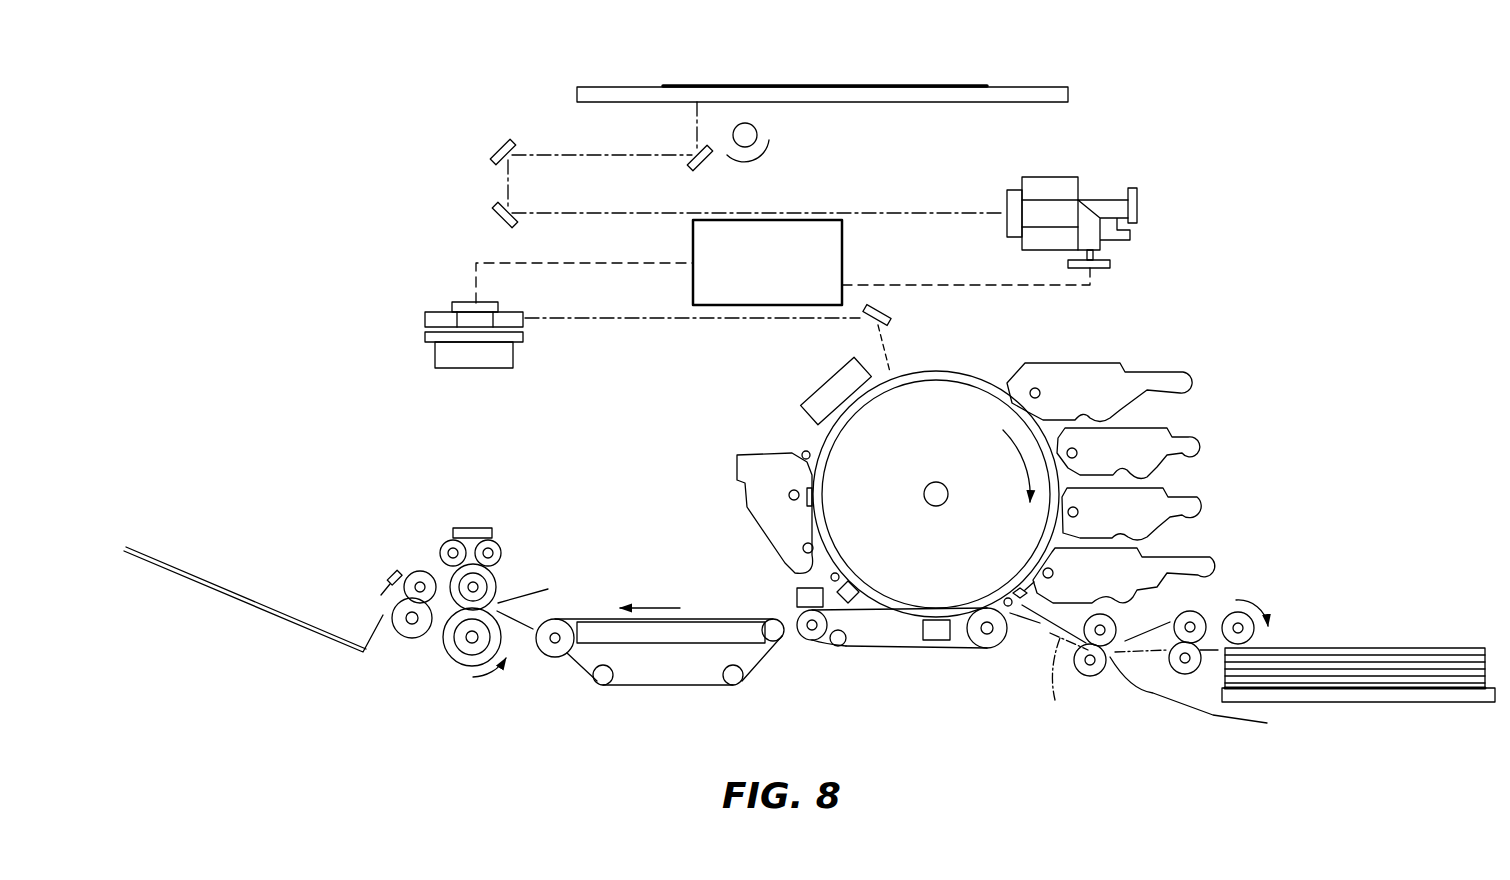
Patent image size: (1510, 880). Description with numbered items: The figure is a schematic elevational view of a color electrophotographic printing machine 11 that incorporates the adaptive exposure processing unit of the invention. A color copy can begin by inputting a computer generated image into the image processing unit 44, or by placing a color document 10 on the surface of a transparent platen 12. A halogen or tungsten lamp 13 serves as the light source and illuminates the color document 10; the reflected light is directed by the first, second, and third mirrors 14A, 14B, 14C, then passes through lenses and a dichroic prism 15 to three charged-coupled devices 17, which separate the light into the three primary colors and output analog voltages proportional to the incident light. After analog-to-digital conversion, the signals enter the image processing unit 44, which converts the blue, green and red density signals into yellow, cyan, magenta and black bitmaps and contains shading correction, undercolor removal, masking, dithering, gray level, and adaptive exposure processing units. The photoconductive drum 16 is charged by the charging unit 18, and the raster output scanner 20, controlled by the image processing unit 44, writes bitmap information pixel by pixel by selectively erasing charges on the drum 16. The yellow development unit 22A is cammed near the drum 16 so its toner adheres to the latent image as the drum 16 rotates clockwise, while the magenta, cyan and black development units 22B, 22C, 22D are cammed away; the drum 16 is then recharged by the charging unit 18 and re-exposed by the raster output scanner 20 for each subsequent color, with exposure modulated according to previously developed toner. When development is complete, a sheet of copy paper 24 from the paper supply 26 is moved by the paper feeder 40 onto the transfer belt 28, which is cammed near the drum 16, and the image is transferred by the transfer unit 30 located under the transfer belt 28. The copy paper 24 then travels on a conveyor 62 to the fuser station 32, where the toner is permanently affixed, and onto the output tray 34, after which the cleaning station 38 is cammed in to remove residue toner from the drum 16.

The color document 10 is at (968, 89).
The image forming apparatus 11 is at (1206, 305).
The transparent platen 12 is at (1060, 92).
The lamp 13 is at (748, 135).
The first mirror 14A is at (707, 165).
The second mirror 14B is at (497, 148).
The third mirror 14C is at (490, 207).
The dichroic prism 15 is at (1036, 185).
The drum 16 is at (957, 374).
The charged-coupled devices 17 is at (1128, 261).
The charging unit 18 is at (814, 366).
The raster output scanner 20 is at (416, 353).
The yellow development unit 22A is at (1185, 378).
The magenta development unit 22B is at (1192, 441).
The cyan development unit 22C is at (1203, 503).
The black development unit 22D is at (1208, 565).
The copy paper 24 is at (1138, 666).
The paper supply 26 is at (1340, 655).
The transfer belt 28 is at (870, 645).
The transfer unit 30 is at (969, 661).
The fuser station 32 is at (406, 671).
The output tray 34 is at (237, 602).
The cleaning station 38 is at (722, 512).
The paper feeder 40 is at (1272, 597).
The image processing unit 44 is at (850, 256).
The conveyor 62 is at (636, 696).